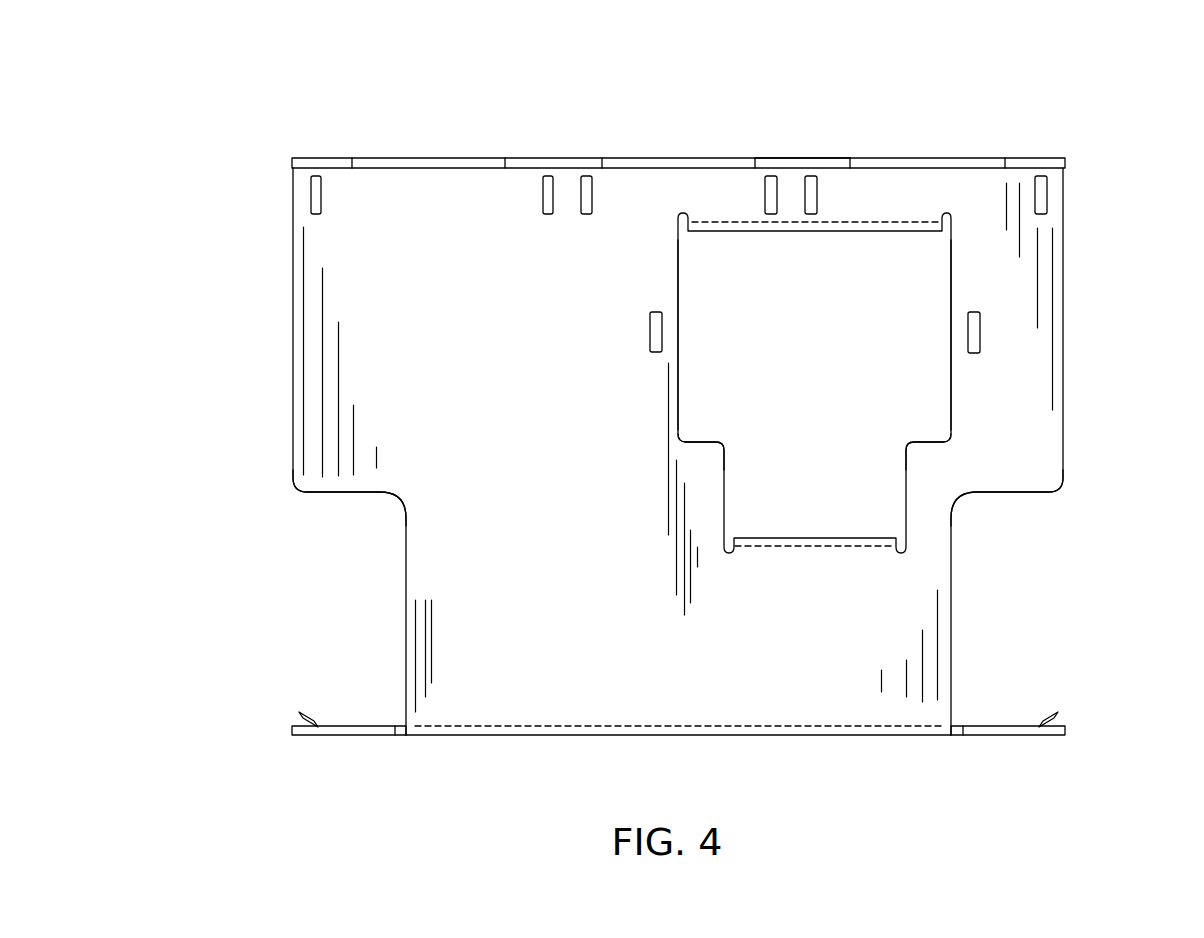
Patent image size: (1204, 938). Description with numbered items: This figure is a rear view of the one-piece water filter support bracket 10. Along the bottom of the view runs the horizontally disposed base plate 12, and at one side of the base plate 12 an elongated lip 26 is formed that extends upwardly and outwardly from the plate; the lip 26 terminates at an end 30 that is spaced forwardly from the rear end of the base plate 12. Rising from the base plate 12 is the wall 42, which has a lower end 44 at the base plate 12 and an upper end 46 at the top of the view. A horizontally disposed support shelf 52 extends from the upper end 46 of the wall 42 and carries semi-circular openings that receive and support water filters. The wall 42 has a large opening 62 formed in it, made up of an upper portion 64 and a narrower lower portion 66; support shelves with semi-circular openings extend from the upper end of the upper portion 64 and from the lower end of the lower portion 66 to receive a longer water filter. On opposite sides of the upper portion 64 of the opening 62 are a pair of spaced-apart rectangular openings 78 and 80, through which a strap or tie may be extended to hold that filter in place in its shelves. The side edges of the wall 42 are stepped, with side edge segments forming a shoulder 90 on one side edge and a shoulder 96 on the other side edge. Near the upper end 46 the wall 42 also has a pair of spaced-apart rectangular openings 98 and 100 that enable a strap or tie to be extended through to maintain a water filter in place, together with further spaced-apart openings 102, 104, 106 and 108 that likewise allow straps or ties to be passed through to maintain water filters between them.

The bracket 10 is at (282, 511).
The base plate 12 is at (355, 696).
The elongated lip 26 is at (1068, 709).
The end of lip 30 is at (290, 707).
The wall 42 is at (345, 363).
The lower end of wall 44 is at (693, 735).
The upper end of wall 46 is at (517, 172).
The support shelf 52 is at (781, 150).
The opening 62 is at (712, 377).
The upper portion of opening 64 is at (678, 257).
The lower portion of opening 66 is at (725, 503).
The rectangular opening 78 is at (975, 340).
The rectangular opening 80 is at (655, 325).
The shoulder 90 is at (1028, 497).
The shoulder 96 is at (357, 493).
The rectangular opening 98 is at (1040, 196).
The rectangular opening 100 is at (810, 192).
The opening 102 is at (768, 193).
The opening 104 is at (587, 188).
The opening 106 is at (547, 194).
The opening 108 is at (313, 194).